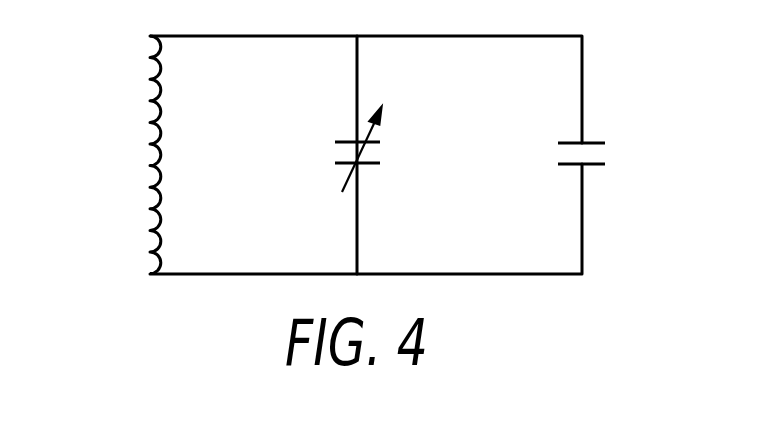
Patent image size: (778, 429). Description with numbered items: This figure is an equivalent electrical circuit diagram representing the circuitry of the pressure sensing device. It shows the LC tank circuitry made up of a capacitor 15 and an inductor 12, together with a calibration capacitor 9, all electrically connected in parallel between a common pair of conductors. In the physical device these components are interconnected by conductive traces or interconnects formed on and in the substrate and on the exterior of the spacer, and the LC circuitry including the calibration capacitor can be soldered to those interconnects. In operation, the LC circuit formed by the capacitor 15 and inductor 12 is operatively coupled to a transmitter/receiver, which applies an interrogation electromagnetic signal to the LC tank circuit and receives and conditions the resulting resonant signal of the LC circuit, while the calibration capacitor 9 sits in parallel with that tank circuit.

The inductor 12 is at (150, 146).
The capacitor 15 is at (368, 166).
The calibration capacitor 9 is at (590, 166).